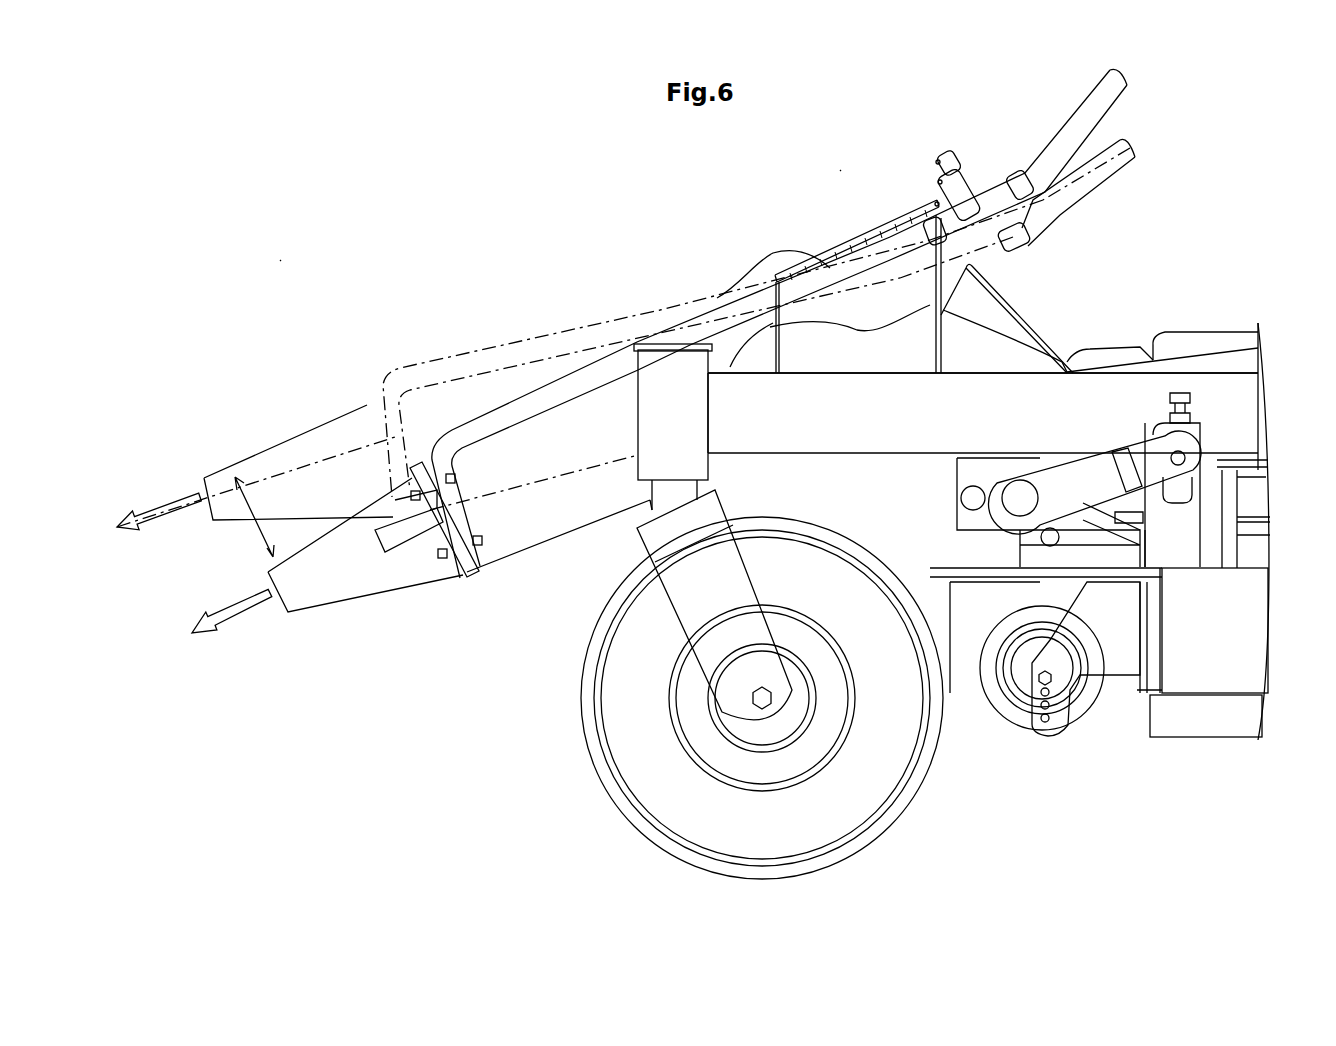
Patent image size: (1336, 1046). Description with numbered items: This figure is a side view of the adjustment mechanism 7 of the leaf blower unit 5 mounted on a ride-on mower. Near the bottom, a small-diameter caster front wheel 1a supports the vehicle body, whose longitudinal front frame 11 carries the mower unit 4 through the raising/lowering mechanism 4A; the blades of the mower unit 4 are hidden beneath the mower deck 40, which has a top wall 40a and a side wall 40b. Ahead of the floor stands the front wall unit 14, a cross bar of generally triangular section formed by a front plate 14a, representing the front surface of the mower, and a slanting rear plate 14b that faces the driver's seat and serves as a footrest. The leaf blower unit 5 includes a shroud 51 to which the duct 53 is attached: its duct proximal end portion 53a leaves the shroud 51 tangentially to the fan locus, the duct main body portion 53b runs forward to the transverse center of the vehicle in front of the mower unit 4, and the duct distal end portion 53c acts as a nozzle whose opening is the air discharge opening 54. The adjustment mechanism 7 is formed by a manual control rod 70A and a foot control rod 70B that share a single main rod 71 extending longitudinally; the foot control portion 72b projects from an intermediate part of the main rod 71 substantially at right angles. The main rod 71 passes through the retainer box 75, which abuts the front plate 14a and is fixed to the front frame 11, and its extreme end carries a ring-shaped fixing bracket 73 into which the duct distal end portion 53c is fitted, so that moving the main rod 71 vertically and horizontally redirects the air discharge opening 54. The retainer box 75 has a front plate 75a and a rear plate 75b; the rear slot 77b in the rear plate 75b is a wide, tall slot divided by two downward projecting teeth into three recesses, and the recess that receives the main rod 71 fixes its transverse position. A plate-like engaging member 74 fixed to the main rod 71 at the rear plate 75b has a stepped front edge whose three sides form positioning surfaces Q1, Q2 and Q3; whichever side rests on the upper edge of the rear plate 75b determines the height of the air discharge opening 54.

The front wheel 1a is at (628, 800).
The mower unit 4 is at (925, 541).
The raising/lowering mechanism 4A is at (1106, 438).
The leaf blower unit 5 is at (298, 295).
The adjustment mechanism 7 is at (833, 170).
The front frame 11 is at (797, 432).
The front wall unit 14 is at (1032, 305).
The front plate 14a is at (935, 374).
The rear plate 14b is at (1062, 358).
The mower deck 40 is at (1157, 752).
The top wall 40a is at (1196, 565).
The side wall 40b is at (1225, 688).
The shroud 51 is at (1212, 318).
The duct 53 is at (526, 560).
The duct proximal end portion 53a is at (1130, 350).
The duct main body portion 53b is at (578, 515).
The duct distal end portion 53c is at (352, 600).
The air discharge opening 54 is at (199, 486).
The manual control rod 70A is at (1138, 86).
The foot control rod 70B is at (1043, 203).
The main rod 71 is at (603, 370).
The foot control portion 72b is at (1012, 172).
The fixing bracket 73 is at (432, 552).
The engaging member 74 is at (952, 156).
The retainer box 75 is at (831, 233).
The front plate 75a is at (776, 376).
The rear plate 75b is at (962, 290).
The rear slot 77b is at (950, 246).
The positioning surface Q1 is at (935, 208).
The positioning surface Q2 is at (938, 182).
The positioning surface Q3 is at (936, 162).